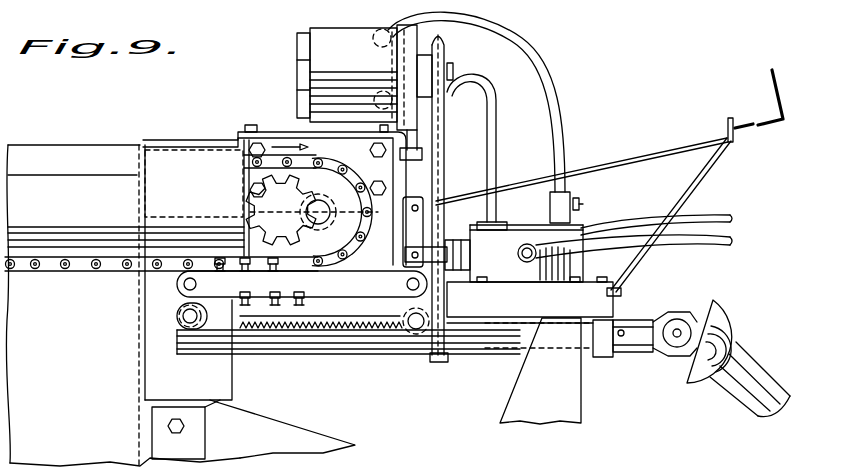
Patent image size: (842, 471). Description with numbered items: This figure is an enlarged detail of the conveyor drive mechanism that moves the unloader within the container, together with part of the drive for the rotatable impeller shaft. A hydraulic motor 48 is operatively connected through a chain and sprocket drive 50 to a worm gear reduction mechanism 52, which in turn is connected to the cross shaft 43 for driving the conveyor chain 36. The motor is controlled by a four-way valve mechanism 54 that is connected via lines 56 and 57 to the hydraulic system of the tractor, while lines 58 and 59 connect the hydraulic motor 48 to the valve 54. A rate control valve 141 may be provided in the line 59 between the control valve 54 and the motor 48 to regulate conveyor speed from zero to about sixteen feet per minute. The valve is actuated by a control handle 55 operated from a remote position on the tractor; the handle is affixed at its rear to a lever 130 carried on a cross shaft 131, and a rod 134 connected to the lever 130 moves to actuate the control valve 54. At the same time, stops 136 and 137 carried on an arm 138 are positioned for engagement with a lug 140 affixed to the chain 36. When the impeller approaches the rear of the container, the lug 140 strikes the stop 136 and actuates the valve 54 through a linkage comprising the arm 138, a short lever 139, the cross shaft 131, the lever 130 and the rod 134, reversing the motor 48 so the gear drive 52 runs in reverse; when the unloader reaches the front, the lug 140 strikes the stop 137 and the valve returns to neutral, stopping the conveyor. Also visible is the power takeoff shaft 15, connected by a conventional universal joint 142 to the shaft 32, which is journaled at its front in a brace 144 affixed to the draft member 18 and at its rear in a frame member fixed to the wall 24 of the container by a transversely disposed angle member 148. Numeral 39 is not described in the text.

The power takeoff shaft 15 is at (740, 372).
The draft member 18 is at (263, 430).
The wall 24 is at (139, 323).
The shaft 32 is at (340, 348).
The conveyor chain 36 is at (112, 268).
The ring gear 39 is at (343, 234).
The cross shaft 43 is at (300, 220).
The hydraulic motor 48 is at (355, 63).
The chain and sprocket drive 50 is at (448, 357).
The worm gear reduction mechanism 52 is at (344, 306).
The four-way valve mechanism 54 is at (581, 228).
The control handle 55 is at (667, 143).
The line 56 is at (700, 246).
The line 57 is at (720, 219).
The line 58 is at (506, 125).
The line 59 is at (548, 92).
The lever 130 is at (421, 198).
The cross shaft 131 is at (420, 334).
The rod 134 is at (447, 249).
The stop 136 is at (229, 262).
The stop 137 is at (280, 270).
The arm 138 is at (383, 293).
The short lever 139 is at (400, 306).
The lug 140 is at (308, 150).
The rate control valve 141 is at (550, 199).
The universal joint 142 is at (660, 358).
The brace 144 is at (567, 403).
The angle member 148 is at (148, 424).